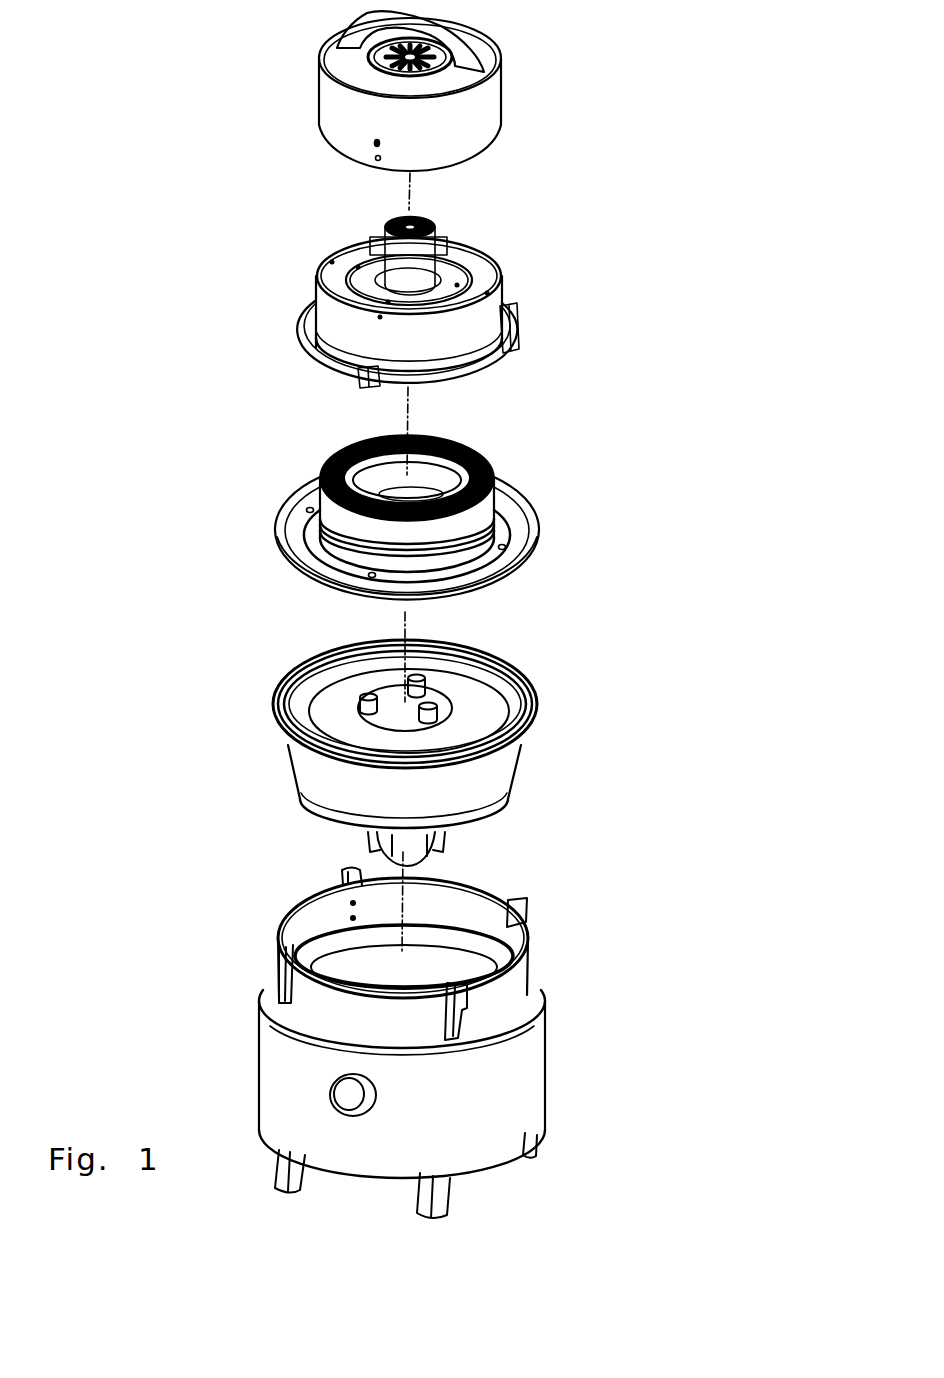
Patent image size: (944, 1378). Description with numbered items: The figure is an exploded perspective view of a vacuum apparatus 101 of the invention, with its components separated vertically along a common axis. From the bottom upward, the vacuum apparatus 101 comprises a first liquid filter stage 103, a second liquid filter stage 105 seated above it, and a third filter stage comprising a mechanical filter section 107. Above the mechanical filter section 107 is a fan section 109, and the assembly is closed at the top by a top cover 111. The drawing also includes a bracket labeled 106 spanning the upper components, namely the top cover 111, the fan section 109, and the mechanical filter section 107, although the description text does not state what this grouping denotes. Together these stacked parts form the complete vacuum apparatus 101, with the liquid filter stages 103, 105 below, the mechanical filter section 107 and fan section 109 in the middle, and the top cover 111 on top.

The vacuum apparatus 101 is at (670, 40).
The first liquid filter stage 103 is at (545, 1068).
The second liquid filter stage 105 is at (513, 765).
The mechanical filter section 107 is at (537, 526).
The fan section 109 is at (517, 315).
The top cover 111 is at (497, 108).
The power head assembly 106 is at (207, 33).